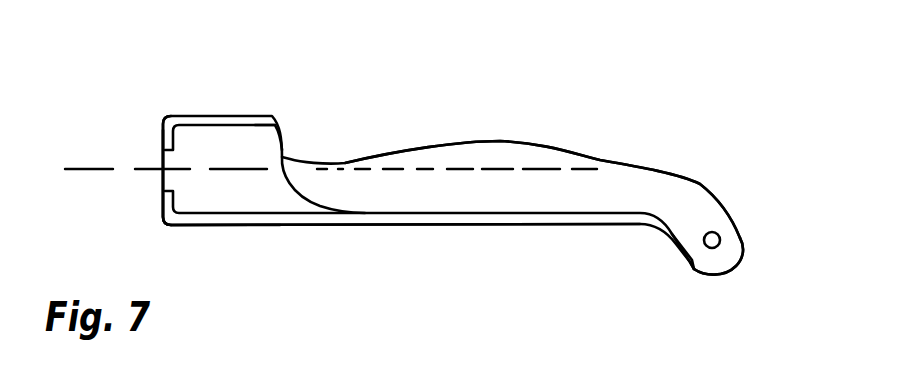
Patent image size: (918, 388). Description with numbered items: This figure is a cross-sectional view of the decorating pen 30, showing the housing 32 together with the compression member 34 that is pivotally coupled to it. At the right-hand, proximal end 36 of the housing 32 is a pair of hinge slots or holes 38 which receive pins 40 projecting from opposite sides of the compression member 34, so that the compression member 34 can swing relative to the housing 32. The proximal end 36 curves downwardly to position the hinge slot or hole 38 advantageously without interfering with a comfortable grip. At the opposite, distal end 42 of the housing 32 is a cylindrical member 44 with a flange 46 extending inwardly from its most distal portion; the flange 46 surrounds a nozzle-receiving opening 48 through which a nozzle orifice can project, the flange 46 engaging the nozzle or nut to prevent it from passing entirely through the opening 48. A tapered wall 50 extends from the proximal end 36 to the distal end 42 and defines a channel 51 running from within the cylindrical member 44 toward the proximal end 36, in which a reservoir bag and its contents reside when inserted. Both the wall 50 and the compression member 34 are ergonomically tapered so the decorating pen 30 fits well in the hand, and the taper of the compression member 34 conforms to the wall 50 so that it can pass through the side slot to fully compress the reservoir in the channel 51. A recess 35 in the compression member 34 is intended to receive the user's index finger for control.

The decorating pen 30 is at (445, 256).
The housing 32 is at (318, 223).
The compression member 34 is at (647, 190).
The recess 35 is at (332, 163).
The proximal end 36 is at (697, 270).
The hinge slots or holes 38 is at (675, 243).
The pins 40 is at (720, 238).
The distal end 42 is at (220, 255).
The cylindrical member 44 is at (213, 115).
The flange 46 is at (160, 133).
The nozzle-receiving opening 48 is at (160, 177).
The tapered wall 50 is at (487, 222).
The channel 51 is at (255, 150).